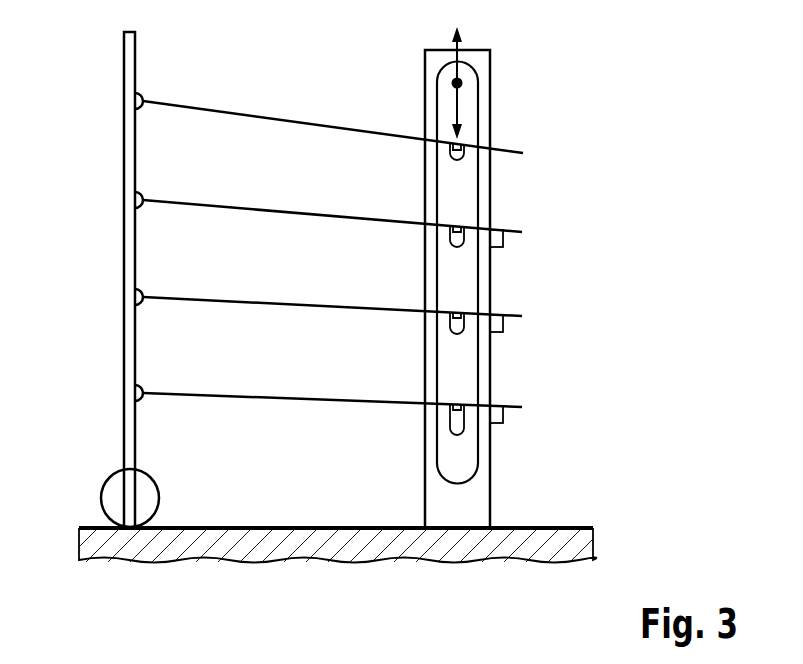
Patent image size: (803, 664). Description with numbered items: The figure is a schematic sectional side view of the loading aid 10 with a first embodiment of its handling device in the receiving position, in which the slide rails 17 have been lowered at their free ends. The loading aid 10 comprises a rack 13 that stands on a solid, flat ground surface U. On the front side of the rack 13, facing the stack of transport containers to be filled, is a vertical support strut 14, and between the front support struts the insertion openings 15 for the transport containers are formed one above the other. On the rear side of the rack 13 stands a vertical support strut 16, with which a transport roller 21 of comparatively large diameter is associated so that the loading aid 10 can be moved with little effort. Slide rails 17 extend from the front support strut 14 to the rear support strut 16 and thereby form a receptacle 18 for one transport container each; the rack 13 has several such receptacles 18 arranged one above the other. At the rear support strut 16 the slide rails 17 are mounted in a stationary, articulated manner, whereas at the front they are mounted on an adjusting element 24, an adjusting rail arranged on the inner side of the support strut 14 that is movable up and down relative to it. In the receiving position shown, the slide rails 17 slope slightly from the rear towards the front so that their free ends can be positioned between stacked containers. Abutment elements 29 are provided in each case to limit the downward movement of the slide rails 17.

The loading aid 10 is at (580, 58).
The rack 13 is at (86, 280).
The vertical support struts 14 is at (470, 495).
The insertion openings 15 is at (540, 100).
The vertical support struts 16 is at (130, 432).
The slide rails 17 is at (205, 215).
The receptacle 18 is at (370, 110).
The transport rollers 21 is at (113, 498).
The adjusting elements 24 is at (486, 64).
The abutment elements 29 is at (503, 237).
The ground surface U is at (553, 540).